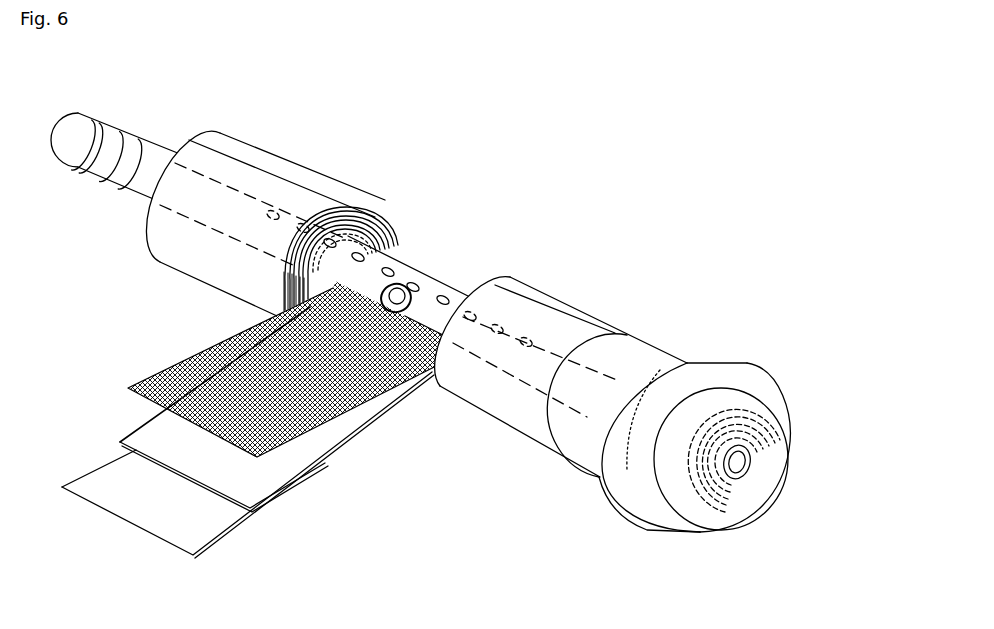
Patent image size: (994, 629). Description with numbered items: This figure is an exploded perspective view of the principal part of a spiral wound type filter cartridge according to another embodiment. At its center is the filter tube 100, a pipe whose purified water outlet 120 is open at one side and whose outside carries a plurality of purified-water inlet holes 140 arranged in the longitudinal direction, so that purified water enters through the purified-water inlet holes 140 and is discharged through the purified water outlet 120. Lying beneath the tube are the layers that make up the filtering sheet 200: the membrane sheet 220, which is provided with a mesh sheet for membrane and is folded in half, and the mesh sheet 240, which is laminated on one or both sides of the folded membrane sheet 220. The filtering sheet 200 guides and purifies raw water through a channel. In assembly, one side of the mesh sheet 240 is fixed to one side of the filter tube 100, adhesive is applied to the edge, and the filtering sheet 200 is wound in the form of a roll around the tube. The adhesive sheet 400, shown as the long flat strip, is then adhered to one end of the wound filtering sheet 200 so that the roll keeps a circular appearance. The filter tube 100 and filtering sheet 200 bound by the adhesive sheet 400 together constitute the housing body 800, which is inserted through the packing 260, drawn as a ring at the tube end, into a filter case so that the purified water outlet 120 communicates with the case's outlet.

The filter tube 100 is at (430, 292).
The purified water outlet 120 is at (77, 107).
The purified-water inlet holes 140 is at (392, 272).
The filtering sheet 200 is at (771, 420).
The membrane sheet 220 is at (272, 475).
The mesh sheet 240 is at (330, 410).
The packing 260 is at (730, 372).
The adhesive sheet 400 is at (273, 176).
The housing body 800 is at (648, 338).